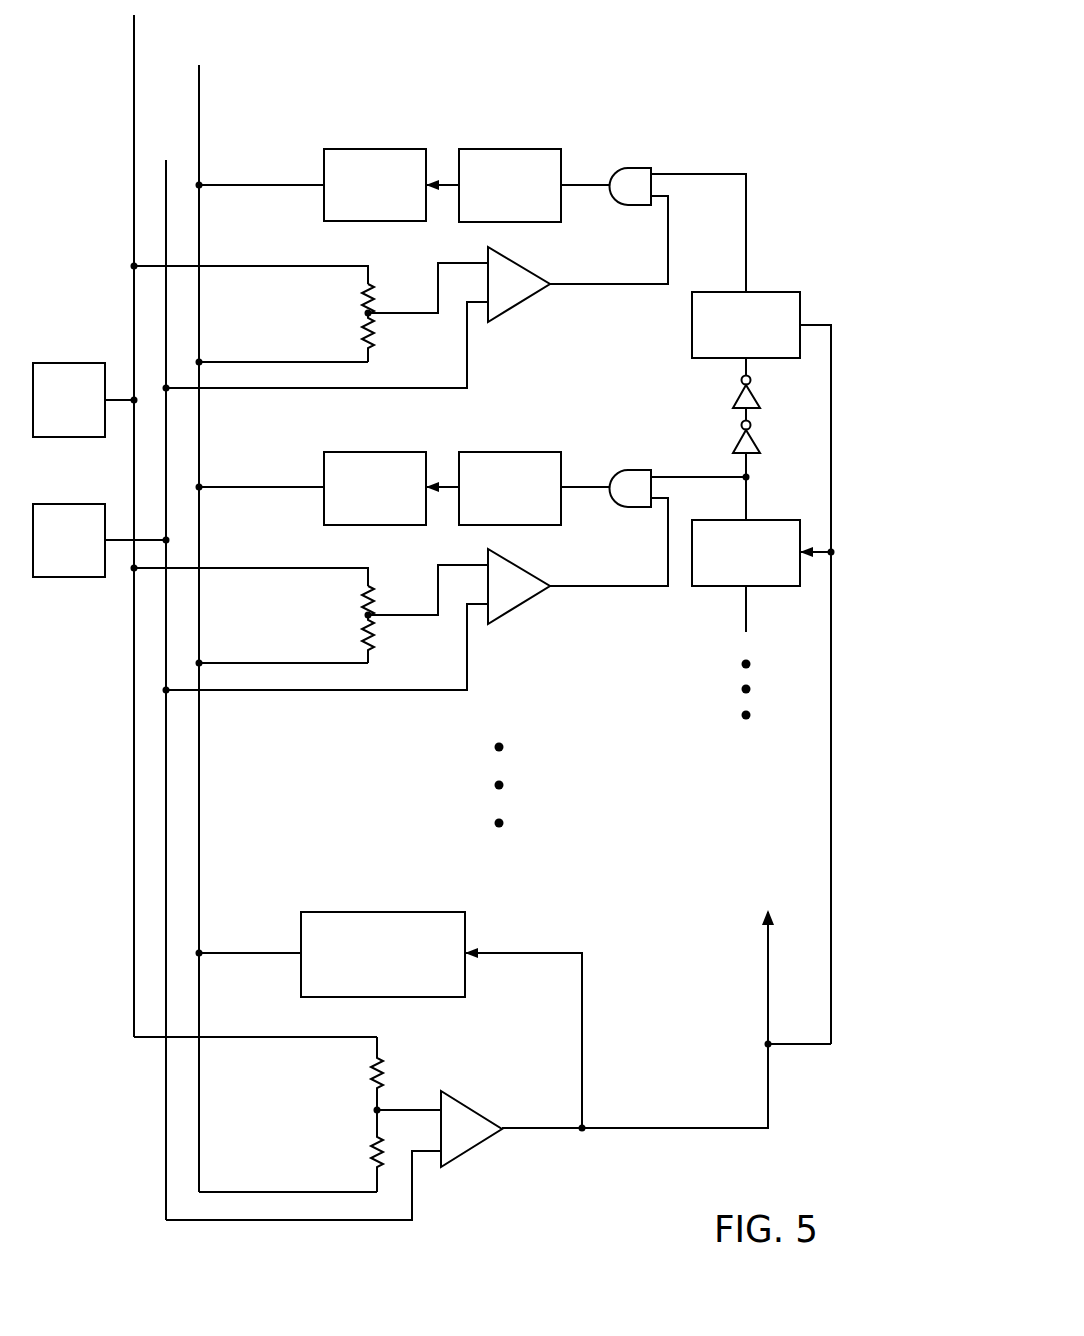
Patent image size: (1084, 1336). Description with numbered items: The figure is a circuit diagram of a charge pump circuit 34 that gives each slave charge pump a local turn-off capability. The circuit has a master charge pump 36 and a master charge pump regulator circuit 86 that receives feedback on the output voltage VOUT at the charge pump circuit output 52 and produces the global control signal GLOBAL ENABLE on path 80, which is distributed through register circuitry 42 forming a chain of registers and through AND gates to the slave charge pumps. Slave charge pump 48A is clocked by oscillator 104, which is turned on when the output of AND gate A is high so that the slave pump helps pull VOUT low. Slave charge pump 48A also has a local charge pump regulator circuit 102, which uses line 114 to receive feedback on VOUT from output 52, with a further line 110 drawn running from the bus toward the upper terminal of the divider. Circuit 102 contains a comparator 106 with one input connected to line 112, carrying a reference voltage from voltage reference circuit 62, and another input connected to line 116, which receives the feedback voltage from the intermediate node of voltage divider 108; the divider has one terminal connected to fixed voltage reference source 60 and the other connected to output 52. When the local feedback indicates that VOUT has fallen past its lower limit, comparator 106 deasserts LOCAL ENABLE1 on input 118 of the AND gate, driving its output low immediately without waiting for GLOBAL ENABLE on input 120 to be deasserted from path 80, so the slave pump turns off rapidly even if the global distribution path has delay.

The charge pump circuit 34 is at (683, 42).
The charge pump circuit output 52 is at (201, 103).
The slave charge pump 48A is at (380, 148).
The oscillator 104 is at (513, 148).
The comparator 106 is at (520, 267).
The input of AND gate 118 is at (660, 198).
The input of AND gate 120 is at (747, 197).
The first feedback line 110 is at (232, 265).
The line 114 is at (232, 361).
The line 116 is at (393, 311).
The line 112 is at (326, 347).
The voltage divider 108 is at (348, 360).
The local charge pump regulator circuit 102 is at (486, 273).
The fixed voltage reference source 60 is at (55, 362).
The voltage reference circuit 62 is at (59, 578).
The register circuitry 42 is at (843, 287).
The master charge pump 36 is at (465, 927).
The path 80 is at (769, 1092).
The master charge pump regulator circuit 86 is at (207, 1232).